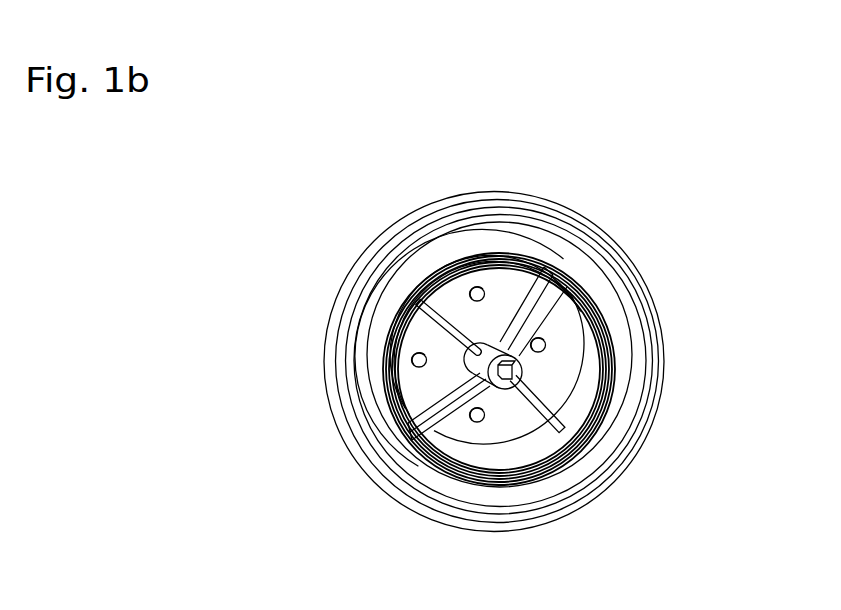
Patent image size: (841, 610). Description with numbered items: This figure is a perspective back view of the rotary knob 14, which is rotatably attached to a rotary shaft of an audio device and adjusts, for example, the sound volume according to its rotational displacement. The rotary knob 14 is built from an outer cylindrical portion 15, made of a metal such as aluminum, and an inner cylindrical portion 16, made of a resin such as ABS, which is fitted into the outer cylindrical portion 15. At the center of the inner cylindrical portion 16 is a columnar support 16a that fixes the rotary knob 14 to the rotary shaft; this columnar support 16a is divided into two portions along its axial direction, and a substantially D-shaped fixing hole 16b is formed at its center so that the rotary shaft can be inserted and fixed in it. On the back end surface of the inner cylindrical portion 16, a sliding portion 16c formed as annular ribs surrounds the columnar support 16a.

The rotary knob 14 is at (310, 288).
The outer cylindrical portion 15 is at (459, 195).
The inner cylindrical portion 16 is at (557, 473).
The columnar support 16a is at (540, 338).
The fixing hole 16b is at (465, 404).
The sliding portion 16c is at (611, 381).